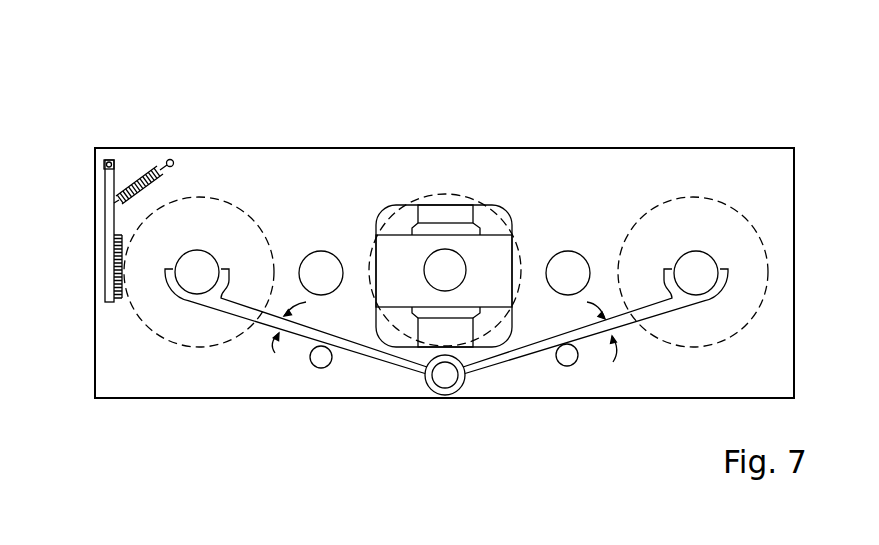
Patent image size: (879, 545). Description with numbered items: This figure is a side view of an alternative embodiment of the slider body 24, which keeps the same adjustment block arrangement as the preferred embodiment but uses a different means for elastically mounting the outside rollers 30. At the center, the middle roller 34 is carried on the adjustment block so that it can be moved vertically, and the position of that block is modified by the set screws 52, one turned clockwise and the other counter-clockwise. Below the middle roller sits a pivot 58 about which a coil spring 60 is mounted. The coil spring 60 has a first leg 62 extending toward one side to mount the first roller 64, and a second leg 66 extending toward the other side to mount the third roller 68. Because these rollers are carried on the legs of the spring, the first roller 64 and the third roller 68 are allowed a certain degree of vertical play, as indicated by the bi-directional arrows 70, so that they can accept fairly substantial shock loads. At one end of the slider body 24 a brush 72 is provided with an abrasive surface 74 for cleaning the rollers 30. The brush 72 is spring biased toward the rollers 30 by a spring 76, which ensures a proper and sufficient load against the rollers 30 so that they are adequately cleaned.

The slider body 24 is at (560, 165).
The outside rollers 30 is at (245, 198).
The middle roller 34 is at (450, 198).
The set screws 52 is at (440, 220).
The pivot 58 is at (446, 378).
The coil spring 60 is at (446, 381).
The first leg 62 is at (356, 351).
The first roller 64 is at (161, 341).
The second leg 66 is at (510, 357).
The third roller 68 is at (753, 224).
The bi-directional arrows 70 is at (275, 353).
The brush 72 is at (110, 220).
The abrasive surface 74 is at (118, 303).
The spring 76 is at (140, 163).